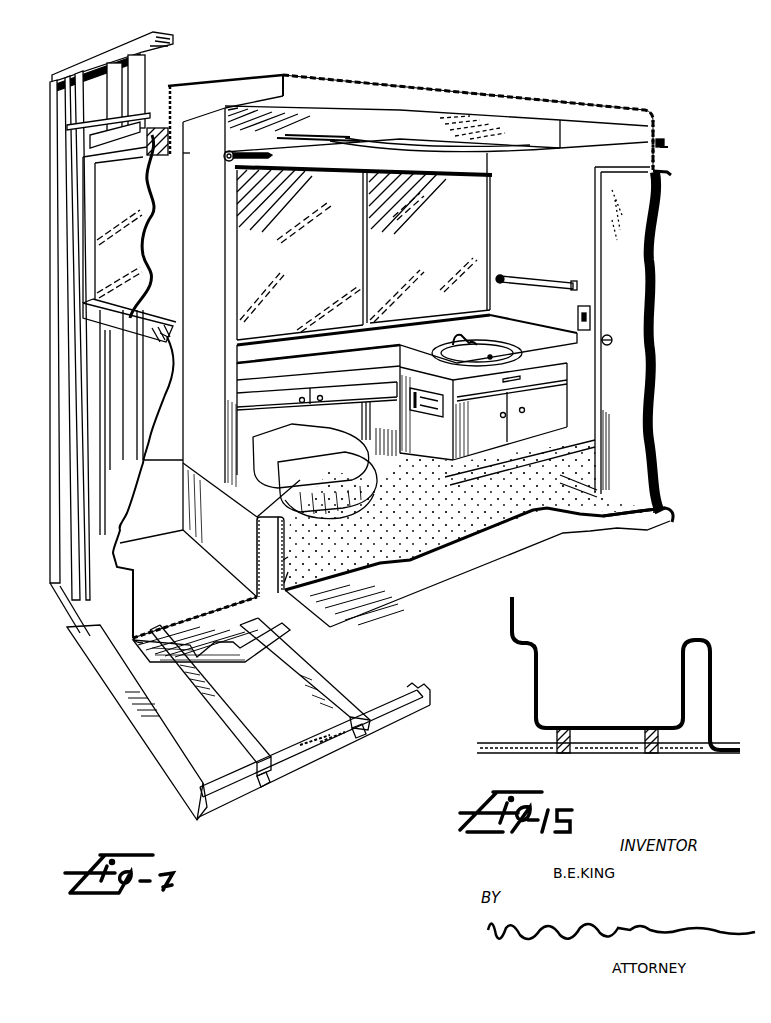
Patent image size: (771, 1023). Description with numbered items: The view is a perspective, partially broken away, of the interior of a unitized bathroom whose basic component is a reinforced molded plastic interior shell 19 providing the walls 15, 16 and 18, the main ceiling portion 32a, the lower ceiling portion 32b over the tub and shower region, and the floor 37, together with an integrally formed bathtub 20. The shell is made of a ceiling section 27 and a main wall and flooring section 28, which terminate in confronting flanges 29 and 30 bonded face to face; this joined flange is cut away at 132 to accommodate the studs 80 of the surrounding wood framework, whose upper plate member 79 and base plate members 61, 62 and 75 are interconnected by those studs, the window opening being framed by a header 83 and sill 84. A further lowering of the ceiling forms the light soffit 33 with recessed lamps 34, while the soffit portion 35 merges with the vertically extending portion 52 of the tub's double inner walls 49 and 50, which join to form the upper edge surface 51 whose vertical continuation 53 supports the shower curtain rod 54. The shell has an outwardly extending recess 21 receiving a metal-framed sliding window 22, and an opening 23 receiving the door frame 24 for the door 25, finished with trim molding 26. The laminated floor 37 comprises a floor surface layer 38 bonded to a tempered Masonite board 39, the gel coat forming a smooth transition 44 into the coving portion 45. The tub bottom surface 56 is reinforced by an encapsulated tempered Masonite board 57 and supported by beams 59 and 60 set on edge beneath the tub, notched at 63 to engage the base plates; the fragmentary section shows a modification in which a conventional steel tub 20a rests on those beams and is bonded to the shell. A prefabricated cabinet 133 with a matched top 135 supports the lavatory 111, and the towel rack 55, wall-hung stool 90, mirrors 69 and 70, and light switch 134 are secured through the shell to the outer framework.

In FIG. 3, the upper plate member 79 is at (118, 47).
In FIG. 3, the studs 80 is at (96, 82).
In FIG. 3, the cut-away portion of joined flange 132 is at (146, 110).
In FIG. 3, the main ceiling portion 32a is at (353, 90).
In FIG. 3, the lower ceiling portion 32b is at (177, 111).
In FIG. 3, the reinforced molded plastic interior shell 19 is at (463, 88).
In FIG. 3, the recessed lamps 34 is at (333, 140).
In FIG. 3, the light soffit 33 is at (408, 117).
In FIG. 3, the ceiling section 27 is at (583, 140).
In FIG. 3, the flange of ceiling section 29 is at (663, 138).
In FIG. 3, the flange of wall section 30 is at (668, 146).
In FIG. 3, the main wall and flooring section 28 is at (660, 158).
In FIG. 18, the main wall and flooring section 28 is at (507, 617).
In FIG. 3, the door frame 24 is at (671, 173).
In FIG. 3, the opening 23 is at (638, 175).
In FIG. 3, the trim molding 26 is at (597, 207).
In FIG. 3, the wall 16 is at (520, 218).
In FIG. 3, the soffit portion 35 is at (209, 122).
In FIG. 3, the shower curtain rod 54 is at (268, 155).
In FIG. 3, the header 83 is at (152, 156).
In FIG. 3, the metal-framed sliding window 22 is at (146, 252).
In FIG. 3, the vertically extending portion of double wall 52 is at (190, 263).
In FIG. 3, the recess 21 is at (152, 320).
In FIG. 3, the vertical continuation of tub surface 53 is at (230, 287).
In FIG. 3, the sill 84 is at (160, 335).
In FIG. 3, the mirror 69 is at (303, 270).
In FIG. 3, the mirror 70 is at (433, 268).
In FIG. 3, the towel rack 55 is at (548, 278).
In FIG. 3, the light switch 134 is at (580, 318).
In FIG. 3, the door 25 is at (660, 320).
In FIG. 3, the cabinet top 135 is at (353, 366).
In FIG. 3, the lavatory 111 is at (431, 358).
In FIG. 3, the wall 15 is at (332, 434).
In FIG. 3, the cabinet 133 is at (410, 453).
In FIG. 3, the wall 18 is at (128, 480).
In FIG. 3, the bathtub 20 is at (155, 566).
In FIG. 3, the upper edge surface of tub 51 is at (237, 492).
In FIG. 3, the inner wall of tub 49 is at (262, 538).
In FIG. 3, the inner wall of tub 50 is at (286, 538).
In FIG. 3, the transition 44 is at (288, 558).
In FIG. 3, the coving portion 45 is at (288, 583).
In FIG. 3, the wall-hung stool 90 is at (367, 505).
In FIG. 3, the floor 37 is at (422, 527).
In FIG. 3, the tempered Masonite board 39 is at (407, 583).
In FIG. 3, the floor surface layer 38 is at (583, 505).
In FIG. 3, the bottom surface of tub 56 is at (182, 607).
In FIG. 3, the tempered Masonite board 57 is at (237, 645).
In FIG. 3, the beam 60 is at (293, 668).
In FIG. 18, the beam 60 is at (667, 747).
In FIG. 3, the beam 59 is at (208, 708).
In FIG. 18, the beam 59 is at (580, 747).
In FIG. 3, the base plate member 75 is at (167, 750).
In FIG. 3, the notch 63 is at (260, 783).
In FIG. 3, the base plate member 62 is at (327, 750).
In FIG. 18, the conventional steel tub 20a is at (678, 678).
In FIG. 18, the base plate member 61 is at (492, 742).